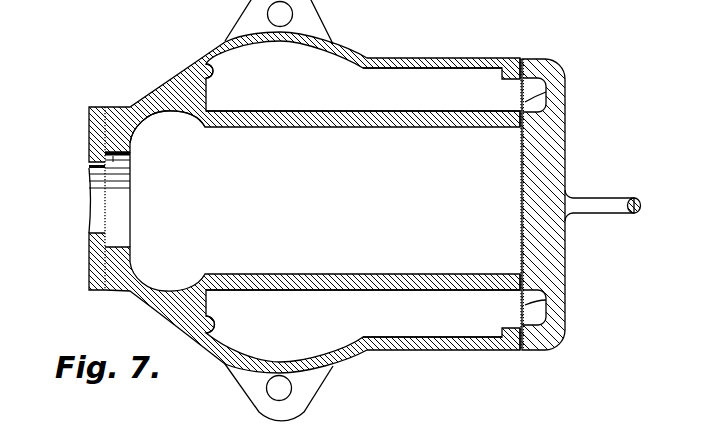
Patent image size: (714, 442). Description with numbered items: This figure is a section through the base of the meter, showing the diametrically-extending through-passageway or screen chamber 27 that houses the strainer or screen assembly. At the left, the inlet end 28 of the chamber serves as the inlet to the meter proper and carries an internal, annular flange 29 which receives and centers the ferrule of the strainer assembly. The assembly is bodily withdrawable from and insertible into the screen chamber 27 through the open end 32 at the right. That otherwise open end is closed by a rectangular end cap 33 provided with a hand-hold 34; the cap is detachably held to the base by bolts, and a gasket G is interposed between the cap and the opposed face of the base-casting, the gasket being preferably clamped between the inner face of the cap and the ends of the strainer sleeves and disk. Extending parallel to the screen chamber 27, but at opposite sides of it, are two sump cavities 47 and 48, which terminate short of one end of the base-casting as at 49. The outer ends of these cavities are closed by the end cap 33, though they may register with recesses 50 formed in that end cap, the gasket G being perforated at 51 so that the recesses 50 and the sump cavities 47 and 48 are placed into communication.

The screen chamber 27 is at (380, 153).
The inlet end 28 is at (122, 122).
The internal annular flange 29 is at (131, 143).
The open end 32 is at (516, 141).
The end cap 33 is at (554, 130).
The hand-hold 34 is at (603, 202).
The sump cavity 47 is at (427, 326).
The sump cavity 48 is at (470, 88).
The cavity end 49 is at (212, 70).
The recess 50 is at (533, 84).
The perforation 51 is at (546, 92).
The gasket G is at (527, 84).